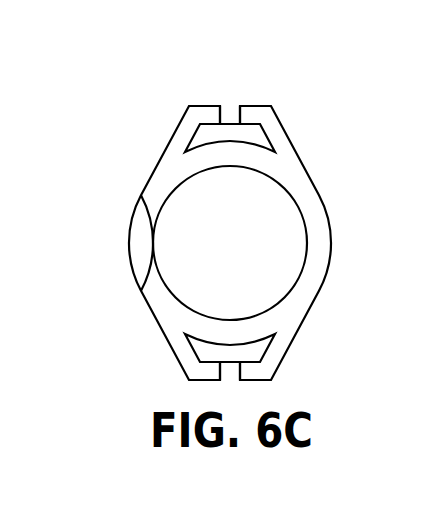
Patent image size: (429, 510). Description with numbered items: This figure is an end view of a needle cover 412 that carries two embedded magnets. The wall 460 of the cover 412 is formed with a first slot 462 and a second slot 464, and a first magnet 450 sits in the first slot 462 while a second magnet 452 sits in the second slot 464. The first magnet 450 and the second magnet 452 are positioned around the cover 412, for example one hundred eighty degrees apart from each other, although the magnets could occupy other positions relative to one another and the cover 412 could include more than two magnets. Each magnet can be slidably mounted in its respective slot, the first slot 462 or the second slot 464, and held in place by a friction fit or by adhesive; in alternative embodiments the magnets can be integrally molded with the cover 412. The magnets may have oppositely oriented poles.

The cover 412 is at (118, 167).
The first magnet 450 is at (227, 112).
The second magnet 452 is at (210, 351).
The wall 460 is at (307, 195).
The first slot 462 is at (268, 140).
The second slot 464 is at (267, 352).